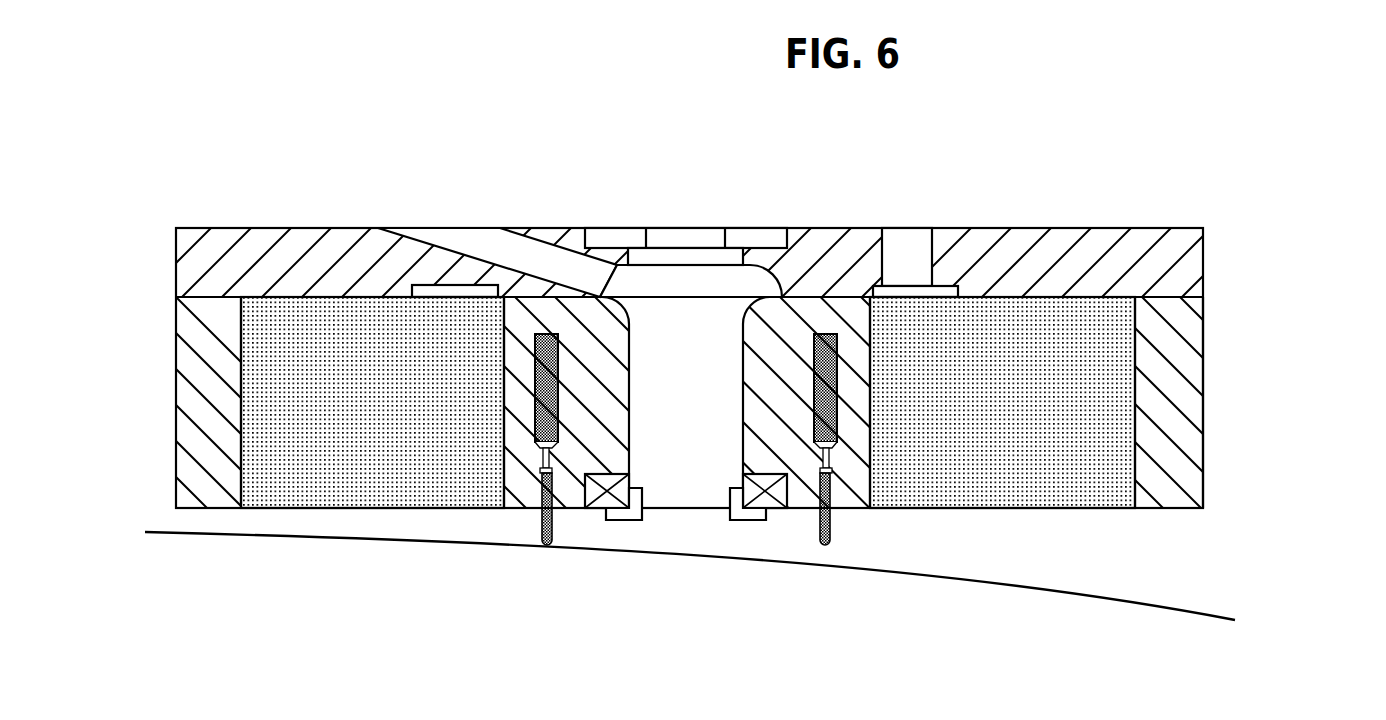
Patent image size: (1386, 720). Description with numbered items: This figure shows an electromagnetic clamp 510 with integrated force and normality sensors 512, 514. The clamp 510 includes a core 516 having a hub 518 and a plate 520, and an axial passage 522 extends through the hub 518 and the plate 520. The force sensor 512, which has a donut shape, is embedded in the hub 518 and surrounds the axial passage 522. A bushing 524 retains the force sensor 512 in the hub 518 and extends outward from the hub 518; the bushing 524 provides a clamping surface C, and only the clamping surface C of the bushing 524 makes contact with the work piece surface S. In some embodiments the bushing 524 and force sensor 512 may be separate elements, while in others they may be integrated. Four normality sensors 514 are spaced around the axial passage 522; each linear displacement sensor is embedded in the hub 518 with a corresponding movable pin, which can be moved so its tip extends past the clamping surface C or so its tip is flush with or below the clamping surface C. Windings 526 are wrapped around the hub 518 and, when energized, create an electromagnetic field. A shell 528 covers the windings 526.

The electromagnetic clamp 510 is at (1288, 233).
The force sensor 512 is at (598, 508).
The normality sensors 514 is at (828, 523).
The core 516 is at (260, 227).
The hub 518 is at (523, 510).
The plate 520 is at (1095, 228).
The axial passage 522 is at (687, 163).
The bushing 524 is at (619, 520).
The windings 526 is at (1055, 477).
The shell 528 is at (475, 235).
The clamping surface C is at (749, 520).
The work piece surface S is at (1217, 613).